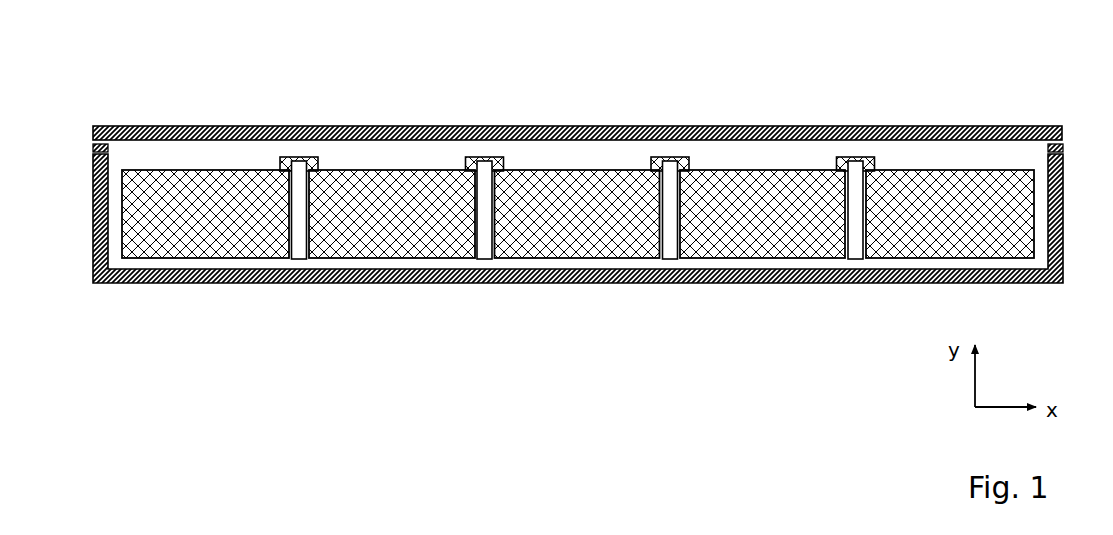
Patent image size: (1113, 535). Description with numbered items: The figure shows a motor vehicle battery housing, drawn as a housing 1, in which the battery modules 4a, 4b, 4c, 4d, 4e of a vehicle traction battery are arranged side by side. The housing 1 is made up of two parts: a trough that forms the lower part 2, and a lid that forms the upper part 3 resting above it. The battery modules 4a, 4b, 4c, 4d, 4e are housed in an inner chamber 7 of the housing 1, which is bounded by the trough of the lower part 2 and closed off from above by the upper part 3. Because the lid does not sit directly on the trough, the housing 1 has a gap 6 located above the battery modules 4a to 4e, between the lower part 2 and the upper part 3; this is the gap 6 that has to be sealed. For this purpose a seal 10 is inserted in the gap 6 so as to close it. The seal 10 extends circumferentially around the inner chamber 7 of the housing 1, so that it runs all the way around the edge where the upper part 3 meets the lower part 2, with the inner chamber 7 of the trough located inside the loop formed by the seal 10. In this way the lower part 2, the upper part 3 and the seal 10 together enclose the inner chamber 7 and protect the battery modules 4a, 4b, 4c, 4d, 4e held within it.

The housing 1 is at (776, 76).
The lower part 2 is at (362, 277).
The upper part 3 is at (326, 127).
The battery module 4a is at (218, 228).
The battery module 4b is at (404, 231).
The battery module 4c is at (588, 231).
The battery module 4d is at (777, 233).
The battery module 4e is at (965, 237).
The gap 6 is at (82, 138).
The inner chamber 7 is at (582, 164).
The seal 10 is at (93, 153).